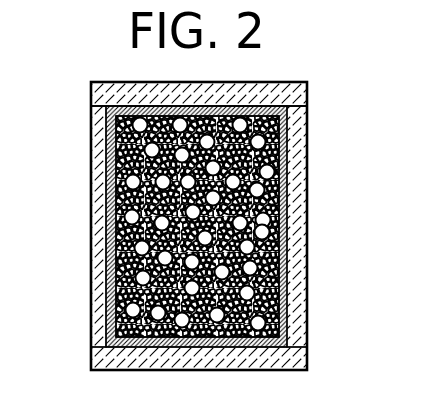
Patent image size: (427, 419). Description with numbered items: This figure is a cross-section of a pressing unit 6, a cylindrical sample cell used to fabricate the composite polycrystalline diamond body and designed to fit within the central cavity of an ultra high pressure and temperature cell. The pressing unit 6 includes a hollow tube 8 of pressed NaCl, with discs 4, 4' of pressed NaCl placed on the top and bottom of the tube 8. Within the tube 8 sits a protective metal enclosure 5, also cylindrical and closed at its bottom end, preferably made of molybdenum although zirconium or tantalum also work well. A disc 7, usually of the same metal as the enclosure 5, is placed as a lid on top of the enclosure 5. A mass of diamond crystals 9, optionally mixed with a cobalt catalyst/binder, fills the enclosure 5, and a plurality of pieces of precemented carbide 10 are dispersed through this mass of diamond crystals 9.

The disc 4 is at (225, 92).
The disc 4' is at (199, 377).
The protective metal enclosure 5 is at (288, 166).
The pressing unit 6 is at (81, 278).
The disc 7 is at (238, 104).
The hollow tube 8 is at (100, 328).
The mass of diamond crystals 9 is at (276, 265).
The pieces of precemented carbide 10 is at (283, 198).